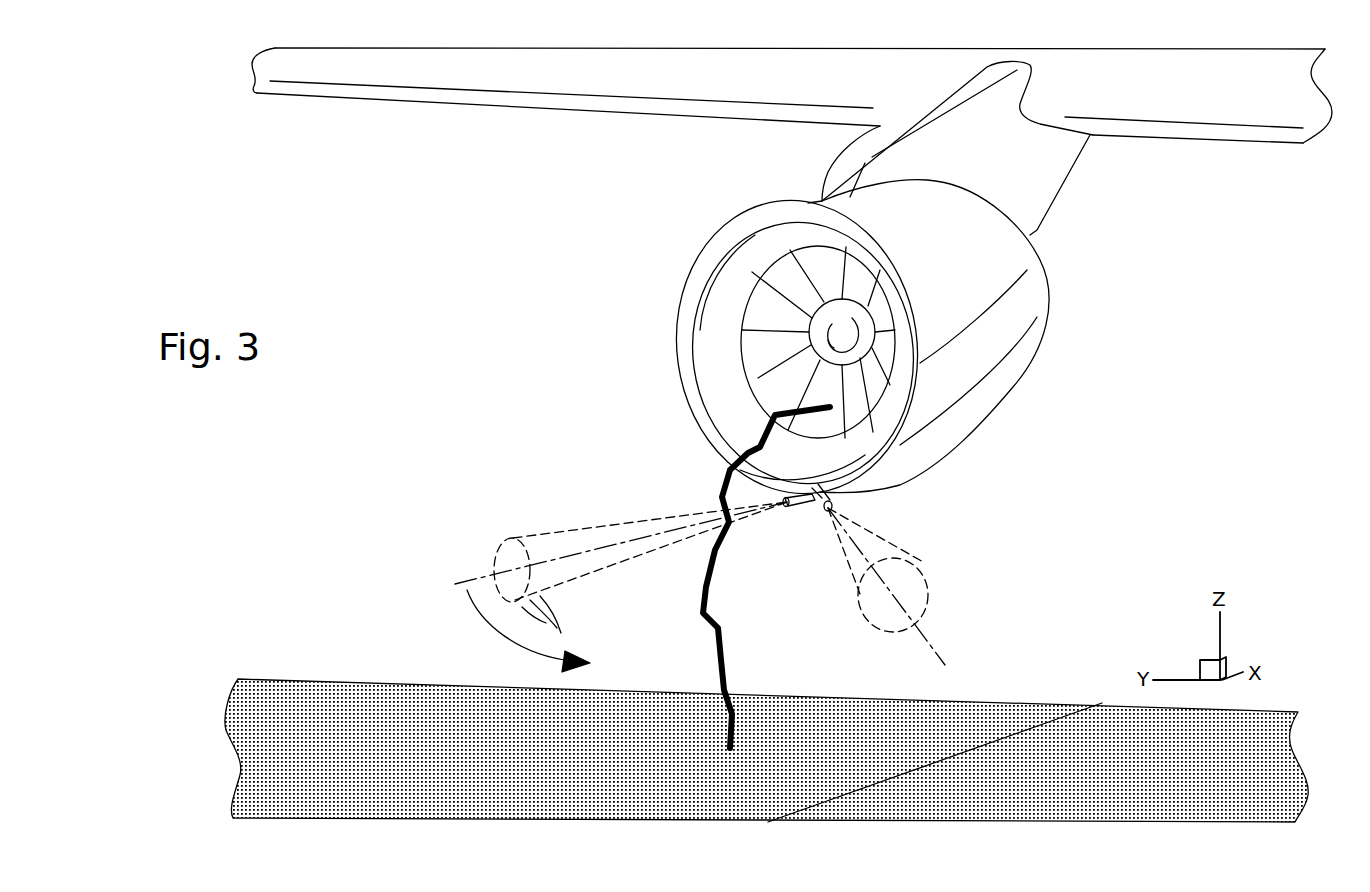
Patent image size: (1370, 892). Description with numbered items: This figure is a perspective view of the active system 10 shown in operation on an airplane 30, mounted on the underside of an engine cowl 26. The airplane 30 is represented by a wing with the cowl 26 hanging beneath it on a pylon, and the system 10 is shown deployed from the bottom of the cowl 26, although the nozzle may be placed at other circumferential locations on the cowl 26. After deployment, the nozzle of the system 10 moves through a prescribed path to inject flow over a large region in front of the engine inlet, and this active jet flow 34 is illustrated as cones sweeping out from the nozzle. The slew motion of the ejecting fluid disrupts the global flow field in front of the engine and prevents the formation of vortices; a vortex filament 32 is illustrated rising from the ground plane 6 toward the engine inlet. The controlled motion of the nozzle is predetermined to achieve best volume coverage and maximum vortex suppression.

The airplane 30 is at (453, 82).
The cowl 26 is at (990, 358).
The active system 10 is at (823, 495).
The active jet flow 34 is at (597, 527).
The vortex filament 32 is at (716, 628).
The ground plane 6 is at (342, 692).